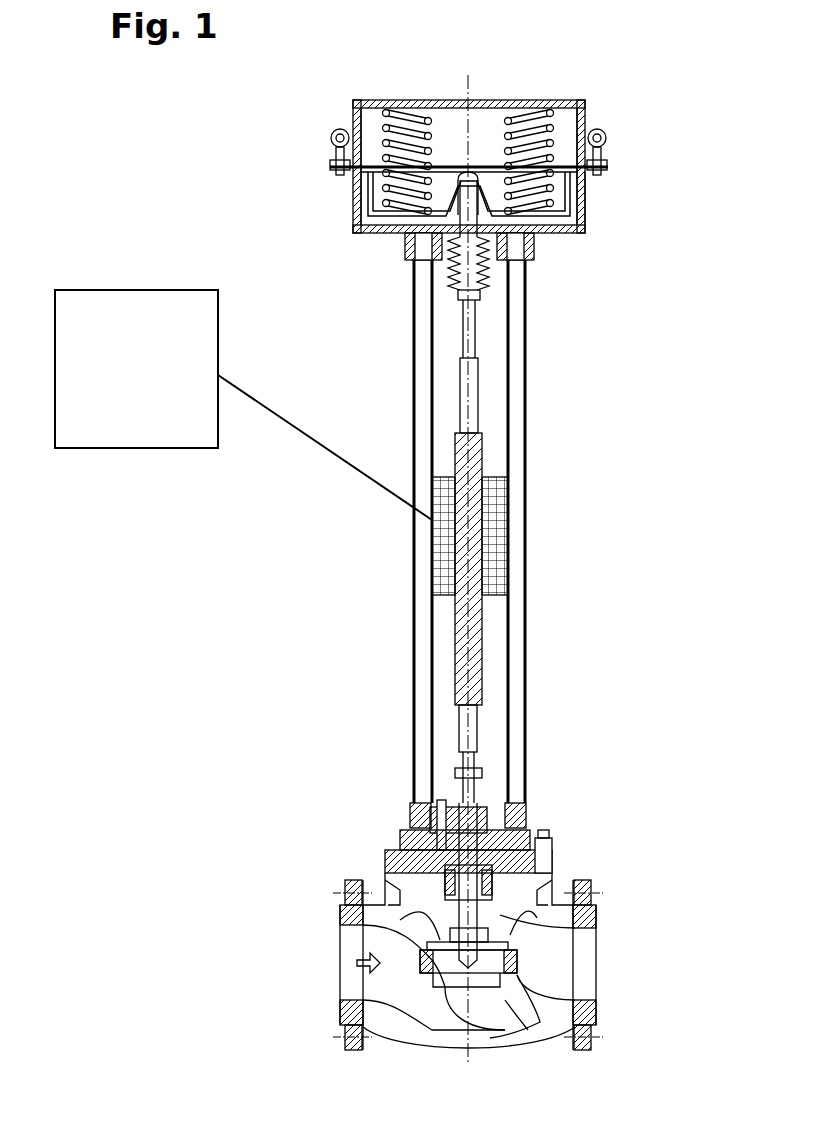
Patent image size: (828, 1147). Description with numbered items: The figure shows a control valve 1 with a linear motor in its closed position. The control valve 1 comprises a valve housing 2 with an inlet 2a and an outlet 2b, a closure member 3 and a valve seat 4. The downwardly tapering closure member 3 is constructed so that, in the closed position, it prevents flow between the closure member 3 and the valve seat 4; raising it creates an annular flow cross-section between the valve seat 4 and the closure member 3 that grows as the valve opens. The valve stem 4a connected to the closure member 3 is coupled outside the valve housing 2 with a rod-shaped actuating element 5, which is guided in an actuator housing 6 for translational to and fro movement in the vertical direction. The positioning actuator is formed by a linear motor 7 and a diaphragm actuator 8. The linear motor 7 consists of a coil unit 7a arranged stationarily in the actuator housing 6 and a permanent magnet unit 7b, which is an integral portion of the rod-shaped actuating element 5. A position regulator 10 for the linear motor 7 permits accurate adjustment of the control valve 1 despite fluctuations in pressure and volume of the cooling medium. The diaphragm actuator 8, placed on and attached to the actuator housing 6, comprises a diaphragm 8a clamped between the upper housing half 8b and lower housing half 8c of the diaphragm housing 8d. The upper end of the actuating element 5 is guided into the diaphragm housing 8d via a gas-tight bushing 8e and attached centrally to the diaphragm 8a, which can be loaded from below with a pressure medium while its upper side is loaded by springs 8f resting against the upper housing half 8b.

The control valve 1 is at (213, 742).
The valve housing 2 is at (432, 1037).
The inlet 2a is at (340, 960).
The outlet 2b is at (598, 962).
The closure member 3 is at (492, 1015).
The valve seat 4 is at (420, 1015).
The valve stem 4a is at (472, 918).
The rod-shaped actuating element 5 is at (488, 660).
The actuator housing 6 is at (526, 390).
The linear motor 7 is at (444, 536).
The coil unit 7a is at (490, 543).
The permanent magnet unit 7b is at (430, 545).
The diaphragm actuator 8 is at (612, 105).
The diaphragm 8a is at (563, 233).
The upper housing half 8b is at (380, 100).
The lower housing half 8c is at (357, 207).
The diaphragm housing 8d is at (612, 200).
The gas-tight bushing 8e is at (452, 264).
The springs 8f is at (518, 100).
The position regulator 10 is at (88, 290).